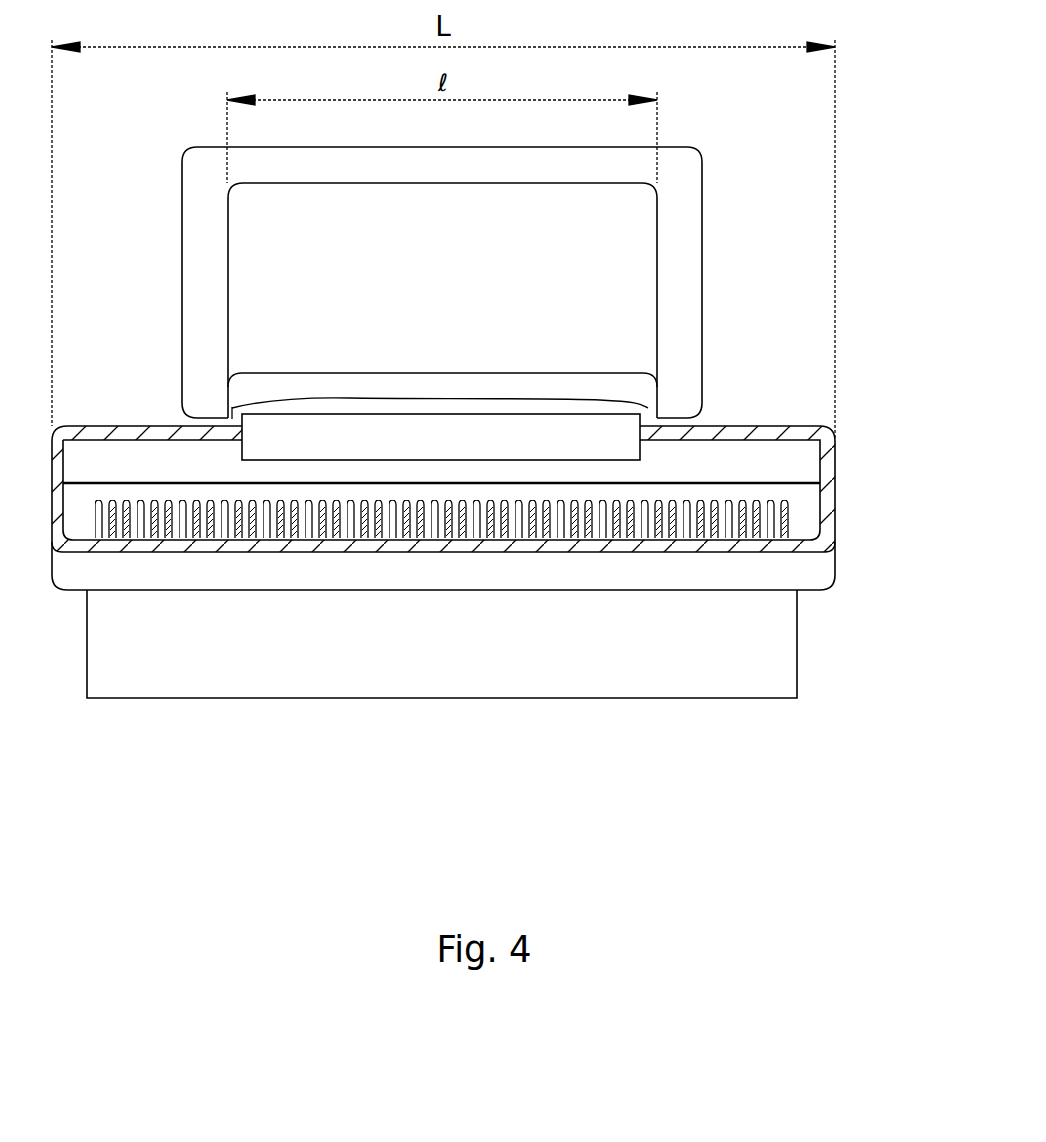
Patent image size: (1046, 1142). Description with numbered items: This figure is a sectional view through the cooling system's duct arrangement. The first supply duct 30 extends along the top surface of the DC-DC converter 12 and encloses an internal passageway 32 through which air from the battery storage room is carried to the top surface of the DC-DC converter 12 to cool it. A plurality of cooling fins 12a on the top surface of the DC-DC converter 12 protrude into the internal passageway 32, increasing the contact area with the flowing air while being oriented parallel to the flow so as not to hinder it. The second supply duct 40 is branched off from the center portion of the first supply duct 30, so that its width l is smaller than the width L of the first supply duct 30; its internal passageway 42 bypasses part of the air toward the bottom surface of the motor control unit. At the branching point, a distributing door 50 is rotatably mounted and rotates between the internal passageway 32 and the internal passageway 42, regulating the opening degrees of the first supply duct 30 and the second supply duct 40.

The DC-DC converter 12 is at (448, 682).
The cooling fins 12a is at (290, 541).
The first supply duct 30 is at (783, 427).
The internal passageway 32 is at (120, 455).
The second supply duct 40 is at (658, 252).
The internal passageway 42 is at (647, 408).
The distributing door 50 is at (610, 438).